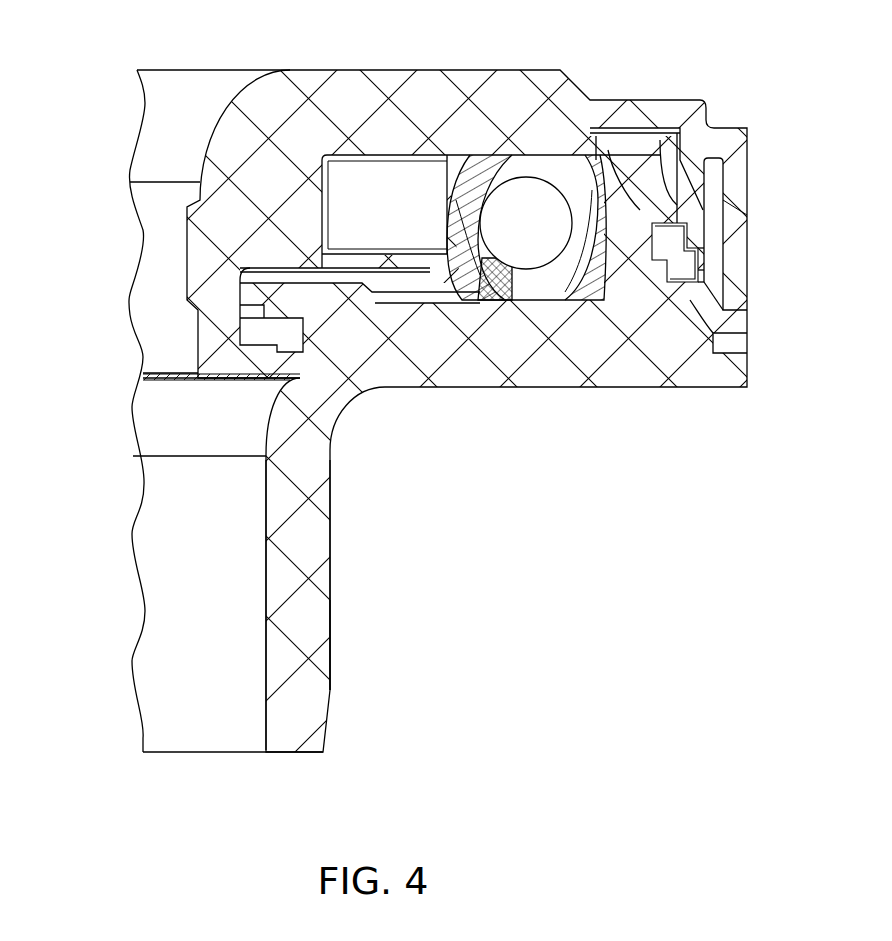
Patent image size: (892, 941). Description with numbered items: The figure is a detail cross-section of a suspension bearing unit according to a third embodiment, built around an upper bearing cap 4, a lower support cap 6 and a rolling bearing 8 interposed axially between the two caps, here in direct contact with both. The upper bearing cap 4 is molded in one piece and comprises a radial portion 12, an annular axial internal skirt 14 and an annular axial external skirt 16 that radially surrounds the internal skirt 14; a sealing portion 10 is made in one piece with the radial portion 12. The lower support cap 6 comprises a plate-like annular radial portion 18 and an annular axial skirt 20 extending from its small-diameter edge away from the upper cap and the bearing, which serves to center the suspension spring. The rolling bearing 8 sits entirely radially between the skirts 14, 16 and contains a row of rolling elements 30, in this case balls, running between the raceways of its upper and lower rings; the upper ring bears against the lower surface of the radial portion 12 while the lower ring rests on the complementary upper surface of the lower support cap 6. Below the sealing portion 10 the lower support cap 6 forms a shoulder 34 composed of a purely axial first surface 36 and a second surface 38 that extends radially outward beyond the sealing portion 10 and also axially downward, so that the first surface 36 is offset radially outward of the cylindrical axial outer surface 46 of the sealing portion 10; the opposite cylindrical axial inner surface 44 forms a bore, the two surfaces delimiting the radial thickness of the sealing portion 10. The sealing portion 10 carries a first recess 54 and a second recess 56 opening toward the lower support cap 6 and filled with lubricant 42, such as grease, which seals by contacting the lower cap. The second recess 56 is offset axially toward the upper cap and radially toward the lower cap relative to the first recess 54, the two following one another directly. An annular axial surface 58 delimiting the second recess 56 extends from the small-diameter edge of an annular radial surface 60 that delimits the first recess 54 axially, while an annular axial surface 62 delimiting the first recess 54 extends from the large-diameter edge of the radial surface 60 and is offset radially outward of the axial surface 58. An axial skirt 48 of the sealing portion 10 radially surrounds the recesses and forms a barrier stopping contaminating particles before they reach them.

The upper bearing cap 4 is at (405, 64).
The lower support cap 6 is at (334, 629).
The rolling bearing 8 is at (441, 190).
The sealing portion 10 is at (675, 218).
The radial portion 12 is at (351, 105).
The annular axial internal skirt 14 is at (214, 291).
The annular axial external skirt 16 is at (740, 208).
The annular radial portion 18 is at (480, 362).
The annular axial skirt 20 is at (300, 546).
The rolling elements 30 is at (514, 233).
The shoulder 34 is at (720, 345).
The first surface 36 is at (716, 333).
The second surface 38 is at (714, 306).
The lubricant 42 is at (704, 222).
The cylindrical axial inner surface 44 is at (692, 195).
The cylindrical axial outer surface 46 is at (720, 135).
The axial skirt 48 is at (700, 272).
The first recess 54 is at (681, 296).
The second recess 56 is at (650, 185).
The annular axial surface 58 is at (637, 258).
The annular radial surface 60 is at (654, 240).
The annular axial surface 62 is at (702, 287).